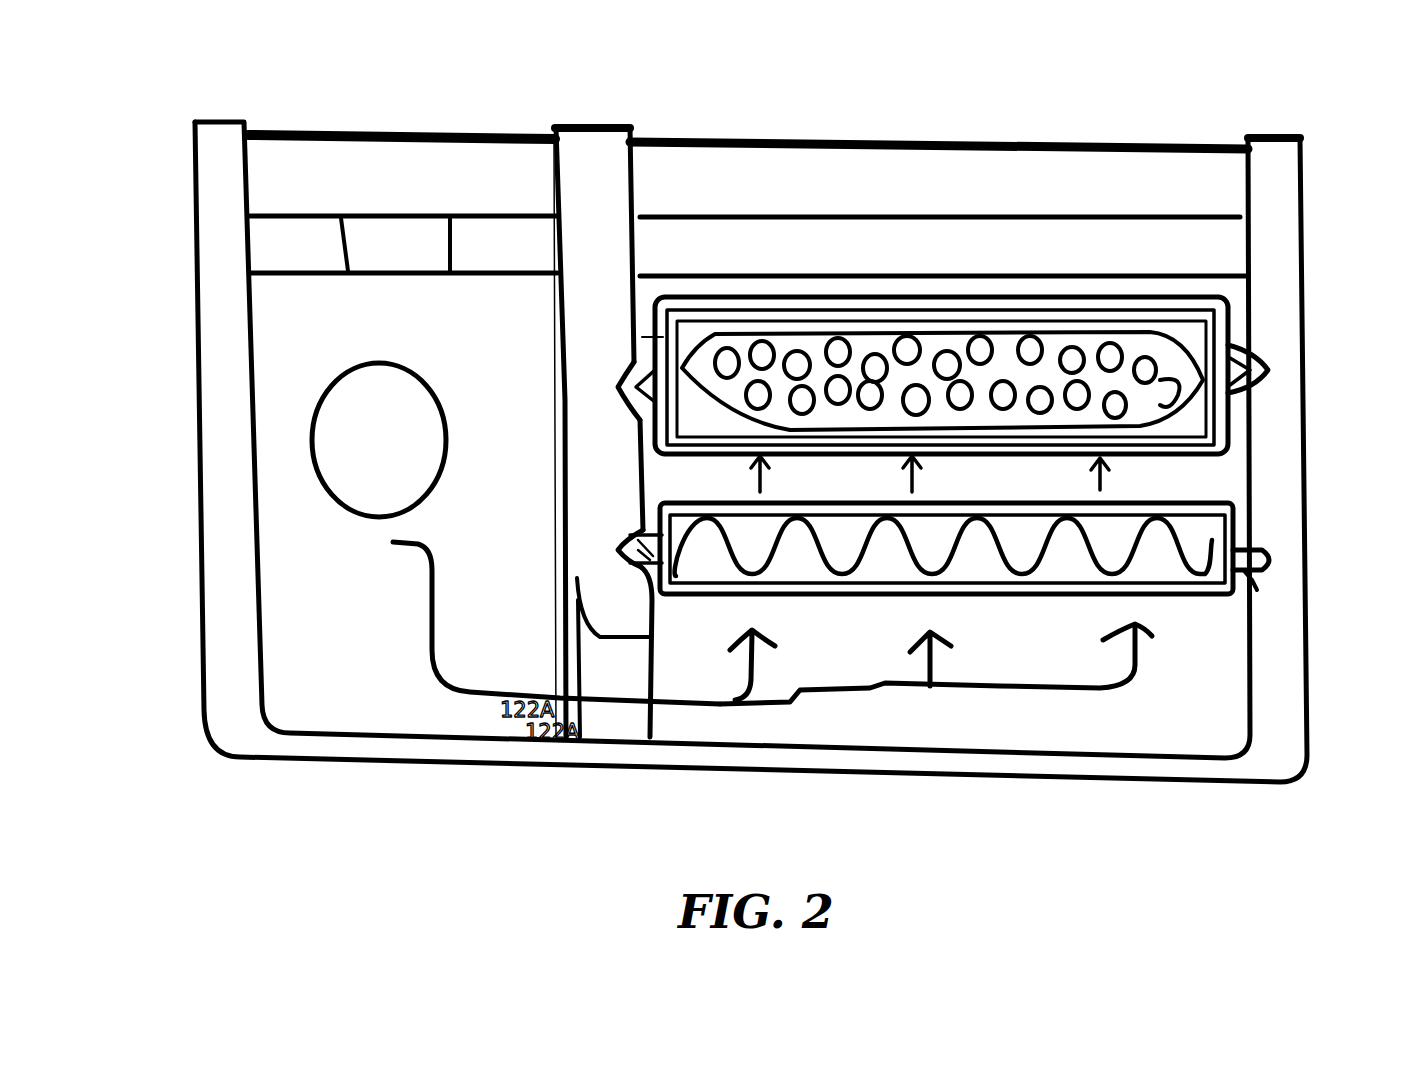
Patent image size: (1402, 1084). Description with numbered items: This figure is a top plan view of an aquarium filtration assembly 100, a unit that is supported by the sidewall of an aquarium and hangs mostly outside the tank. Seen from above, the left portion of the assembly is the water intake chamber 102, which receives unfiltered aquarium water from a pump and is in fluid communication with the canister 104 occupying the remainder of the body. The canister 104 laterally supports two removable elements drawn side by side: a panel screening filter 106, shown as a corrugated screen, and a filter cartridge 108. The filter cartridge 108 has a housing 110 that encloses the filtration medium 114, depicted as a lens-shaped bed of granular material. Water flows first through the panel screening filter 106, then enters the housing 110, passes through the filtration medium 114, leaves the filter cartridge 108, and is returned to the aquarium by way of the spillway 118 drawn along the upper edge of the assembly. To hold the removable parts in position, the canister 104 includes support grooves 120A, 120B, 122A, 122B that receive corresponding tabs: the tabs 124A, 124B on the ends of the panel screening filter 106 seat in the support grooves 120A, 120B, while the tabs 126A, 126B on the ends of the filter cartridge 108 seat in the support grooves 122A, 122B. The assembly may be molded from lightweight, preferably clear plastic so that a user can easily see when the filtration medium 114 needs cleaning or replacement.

The filtration assembly 100 is at (92, 163).
The water intake chamber 102 is at (340, 597).
The canister 104 is at (1195, 704).
The panel screening filter 106 is at (1238, 508).
The filter cartridge 108 is at (1230, 310).
The housing 110 is at (1148, 300).
The filtration medium 114 is at (938, 350).
The spillway 118 is at (783, 258).
The support groove 120A is at (1258, 582).
The support groove 120B is at (627, 560).
The support groove 122A is at (1273, 390).
The support groove 122B is at (617, 397).
The tab 124A is at (1270, 547).
The tab 124B is at (627, 533).
The tab 126A is at (1270, 352).
The tab 126B is at (637, 380).